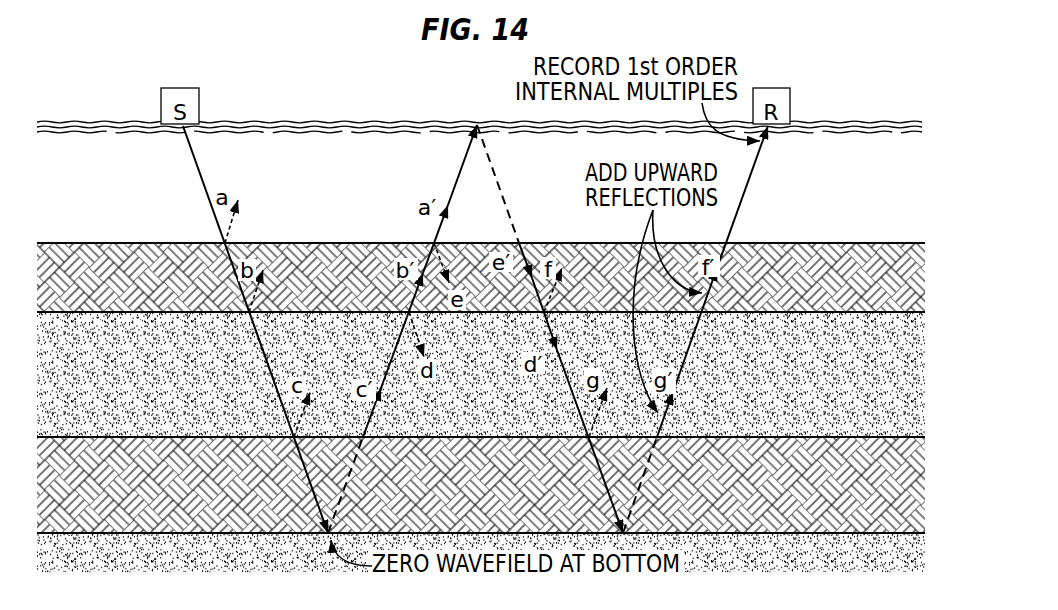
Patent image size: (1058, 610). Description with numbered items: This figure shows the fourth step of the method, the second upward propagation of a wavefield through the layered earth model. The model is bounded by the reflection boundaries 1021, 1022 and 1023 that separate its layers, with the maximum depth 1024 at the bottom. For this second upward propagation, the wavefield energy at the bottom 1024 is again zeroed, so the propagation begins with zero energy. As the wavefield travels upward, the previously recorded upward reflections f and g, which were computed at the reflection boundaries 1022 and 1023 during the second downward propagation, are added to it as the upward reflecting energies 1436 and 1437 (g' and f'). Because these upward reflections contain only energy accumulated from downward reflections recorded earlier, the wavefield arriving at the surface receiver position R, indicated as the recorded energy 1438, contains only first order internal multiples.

The reflection boundary 1021 is at (830, 243).
The reflection boundary 1022 is at (830, 312).
The reflection boundary 1023 is at (830, 437).
The maximum depth 1024 is at (830, 533).
The upward reflecting energy 1436 is at (668, 410).
The upward reflecting energy 1437 is at (712, 285).
The recorded first order internal multiple 1438 is at (762, 163).